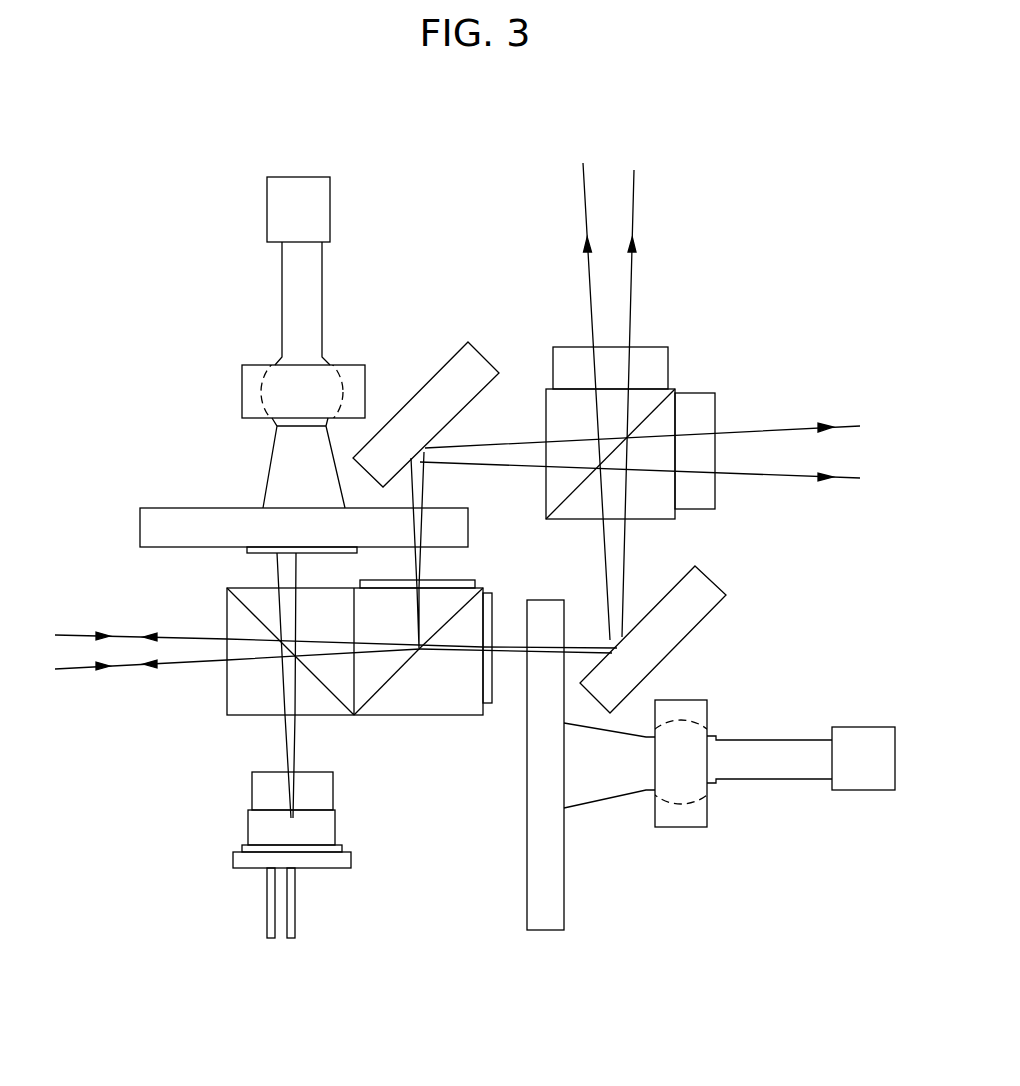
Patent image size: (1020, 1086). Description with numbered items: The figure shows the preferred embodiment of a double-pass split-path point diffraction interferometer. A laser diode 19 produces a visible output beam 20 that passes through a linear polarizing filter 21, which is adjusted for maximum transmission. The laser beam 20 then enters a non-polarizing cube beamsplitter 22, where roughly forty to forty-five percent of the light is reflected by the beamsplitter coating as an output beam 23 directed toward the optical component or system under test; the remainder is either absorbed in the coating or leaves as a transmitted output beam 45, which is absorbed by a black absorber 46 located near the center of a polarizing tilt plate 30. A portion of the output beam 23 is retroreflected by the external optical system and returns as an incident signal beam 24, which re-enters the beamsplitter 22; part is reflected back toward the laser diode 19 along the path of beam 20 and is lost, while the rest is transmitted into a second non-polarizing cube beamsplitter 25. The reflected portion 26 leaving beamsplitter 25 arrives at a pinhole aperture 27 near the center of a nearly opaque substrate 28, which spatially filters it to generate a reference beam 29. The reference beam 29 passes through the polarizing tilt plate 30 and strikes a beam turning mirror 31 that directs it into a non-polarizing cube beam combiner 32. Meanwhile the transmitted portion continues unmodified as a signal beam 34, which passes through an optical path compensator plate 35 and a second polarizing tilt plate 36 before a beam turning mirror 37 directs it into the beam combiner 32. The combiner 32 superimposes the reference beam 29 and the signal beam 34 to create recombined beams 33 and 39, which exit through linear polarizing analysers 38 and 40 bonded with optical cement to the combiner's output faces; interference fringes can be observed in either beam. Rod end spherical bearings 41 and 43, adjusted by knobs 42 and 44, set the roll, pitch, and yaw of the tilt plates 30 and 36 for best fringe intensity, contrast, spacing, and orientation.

The laser diode 19 is at (228, 828).
The output beam 20 is at (298, 752).
The linear polarizing filter 21 is at (252, 793).
The non-polarizing cube beamsplitter 22 is at (227, 702).
The output beam 23 is at (150, 632).
The incident signal beam 24 is at (103, 633).
The non-polarizing cube beamsplitter 25 is at (420, 715).
The reflected portion 26 is at (416, 622).
The pinhole aperture 27 is at (422, 576).
The nearly opaque substrate 28 is at (478, 574).
The reference beam 29 is at (424, 487).
The polarizing tilt plate 30 is at (185, 508).
The beam turning mirror 31 is at (487, 386).
The non-polarizing cube beam combiner 32 is at (546, 498).
The recombined beam 33 is at (635, 286).
The signal beam 34 is at (445, 651).
The optical path compensator plate 35 is at (492, 695).
The polarizing tilt plate 36 is at (527, 845).
The beam turning mirror 37 is at (675, 584).
The linear polarizing analyser 38 is at (655, 347).
The recombined beam 39 is at (796, 425).
The linear polarizing analyser 40 is at (715, 398).
The rod end spherical bearing 41 is at (222, 390).
The knob 42 is at (267, 207).
The rod end spherical bearing 43 is at (682, 845).
The knob 44 is at (853, 727).
The transmitted output beam 45 is at (300, 575).
The black absorber 46 is at (250, 565).